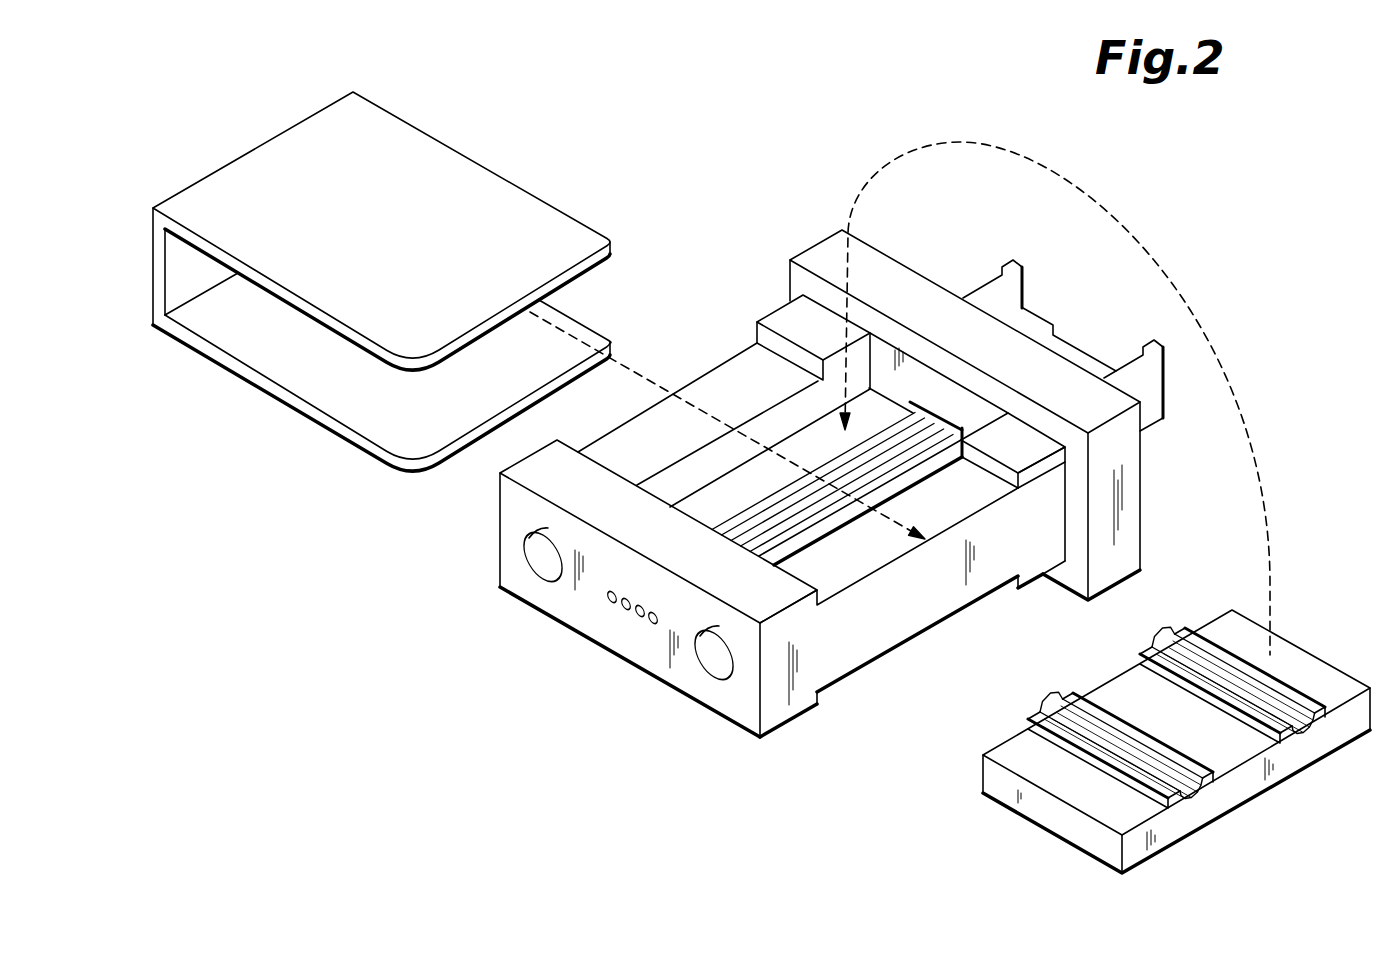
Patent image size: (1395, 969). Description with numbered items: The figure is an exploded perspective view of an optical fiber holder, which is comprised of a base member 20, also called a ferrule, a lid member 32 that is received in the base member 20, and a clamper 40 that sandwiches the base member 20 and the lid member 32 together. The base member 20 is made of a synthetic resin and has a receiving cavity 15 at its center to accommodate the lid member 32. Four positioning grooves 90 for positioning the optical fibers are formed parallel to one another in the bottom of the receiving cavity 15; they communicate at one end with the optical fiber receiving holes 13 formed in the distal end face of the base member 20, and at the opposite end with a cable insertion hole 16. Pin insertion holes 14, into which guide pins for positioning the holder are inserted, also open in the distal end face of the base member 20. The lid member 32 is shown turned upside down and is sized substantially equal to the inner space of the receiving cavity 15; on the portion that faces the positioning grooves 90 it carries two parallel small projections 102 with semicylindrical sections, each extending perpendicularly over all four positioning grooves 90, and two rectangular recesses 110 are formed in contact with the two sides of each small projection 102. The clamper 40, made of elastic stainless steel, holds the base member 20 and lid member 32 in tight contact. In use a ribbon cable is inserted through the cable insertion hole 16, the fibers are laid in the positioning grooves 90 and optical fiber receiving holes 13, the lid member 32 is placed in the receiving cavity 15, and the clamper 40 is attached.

The optical fiber receiving holes 13 is at (628, 612).
The pin insertion holes 14 is at (707, 668).
The receiving cavity 15 is at (797, 450).
The cable insertion hole 16 is at (1068, 340).
The base member 20 is at (862, 640).
The lid member 32 is at (1228, 790).
The clamper 40 is at (473, 190).
The positioning grooves 90 is at (835, 460).
The small projections 102 is at (1205, 668).
The rectangular recesses 110 is at (1075, 742).